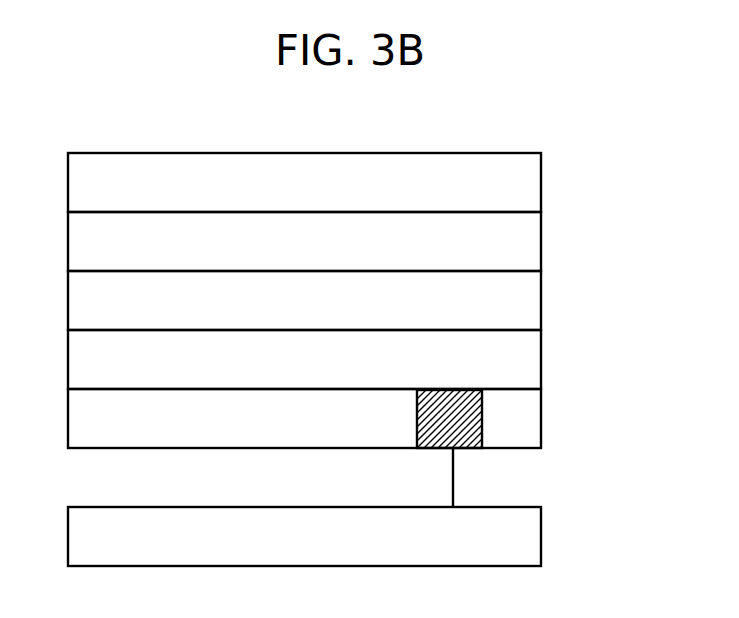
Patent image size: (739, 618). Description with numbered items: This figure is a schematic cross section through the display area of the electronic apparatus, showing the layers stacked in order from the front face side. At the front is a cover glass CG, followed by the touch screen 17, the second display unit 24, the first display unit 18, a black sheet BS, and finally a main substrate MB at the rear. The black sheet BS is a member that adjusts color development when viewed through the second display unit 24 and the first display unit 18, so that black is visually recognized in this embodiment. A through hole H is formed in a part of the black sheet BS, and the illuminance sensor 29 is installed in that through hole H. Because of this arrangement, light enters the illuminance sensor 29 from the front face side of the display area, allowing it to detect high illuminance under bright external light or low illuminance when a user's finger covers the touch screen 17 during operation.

The cover glass CG is at (541, 181).
The touch screen 17 is at (541, 240).
The second display unit 24 is at (541, 299).
The first display unit 18 is at (541, 358).
The black sheet BS is at (541, 430).
The illuminance sensor 29 is at (472, 412).
The through hole H is at (480, 462).
The main substrate MB is at (541, 532).